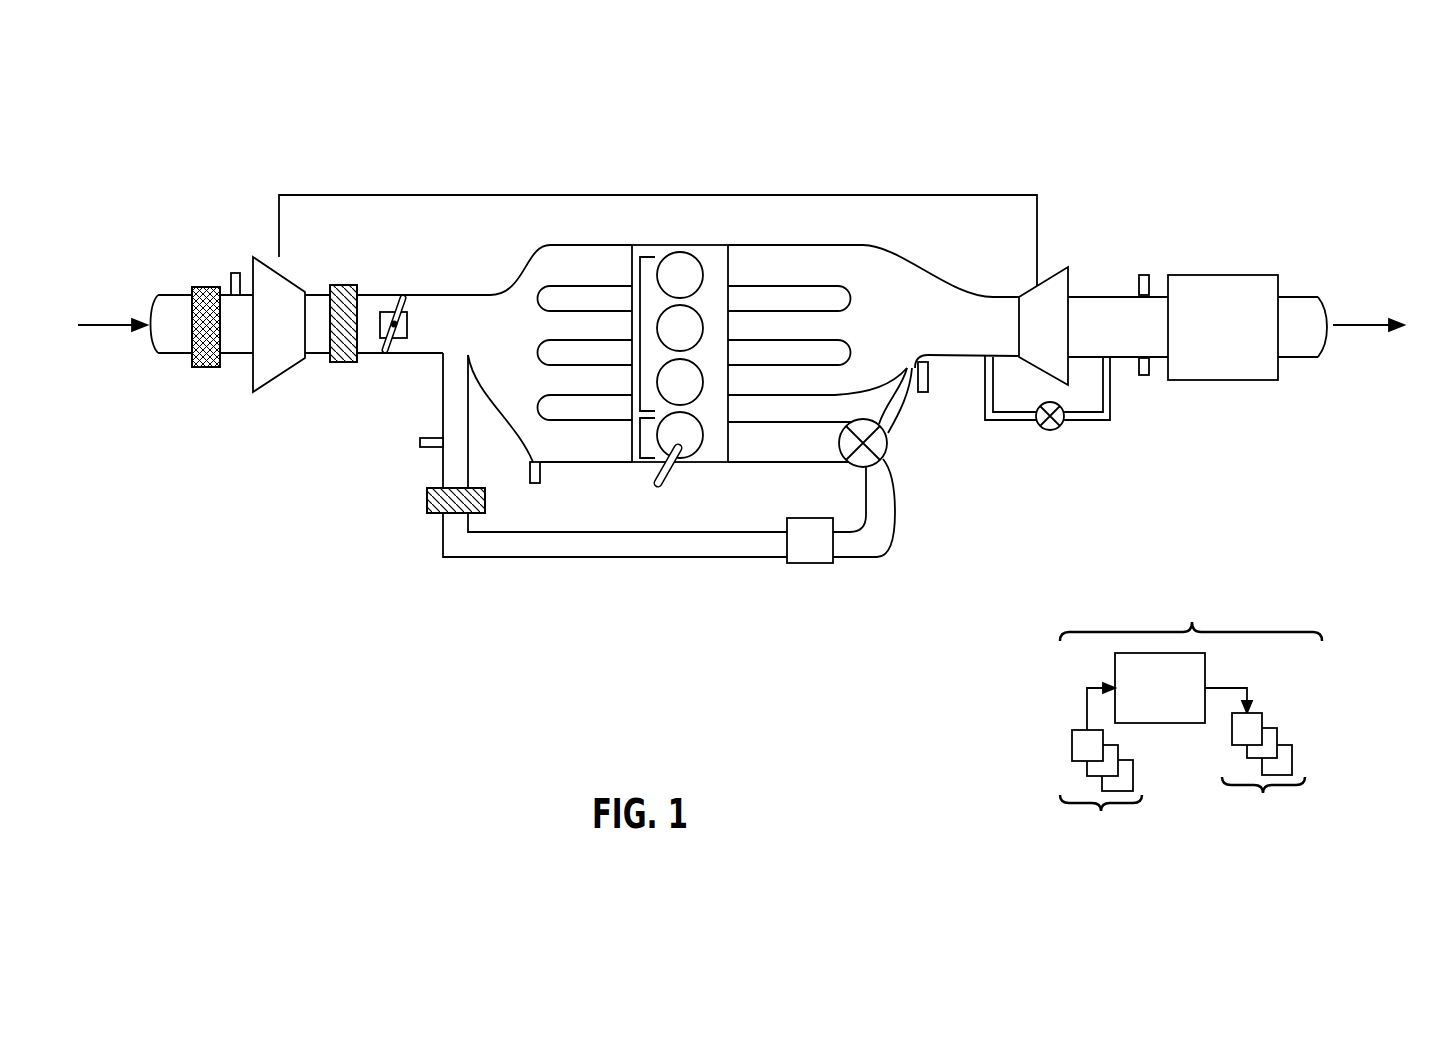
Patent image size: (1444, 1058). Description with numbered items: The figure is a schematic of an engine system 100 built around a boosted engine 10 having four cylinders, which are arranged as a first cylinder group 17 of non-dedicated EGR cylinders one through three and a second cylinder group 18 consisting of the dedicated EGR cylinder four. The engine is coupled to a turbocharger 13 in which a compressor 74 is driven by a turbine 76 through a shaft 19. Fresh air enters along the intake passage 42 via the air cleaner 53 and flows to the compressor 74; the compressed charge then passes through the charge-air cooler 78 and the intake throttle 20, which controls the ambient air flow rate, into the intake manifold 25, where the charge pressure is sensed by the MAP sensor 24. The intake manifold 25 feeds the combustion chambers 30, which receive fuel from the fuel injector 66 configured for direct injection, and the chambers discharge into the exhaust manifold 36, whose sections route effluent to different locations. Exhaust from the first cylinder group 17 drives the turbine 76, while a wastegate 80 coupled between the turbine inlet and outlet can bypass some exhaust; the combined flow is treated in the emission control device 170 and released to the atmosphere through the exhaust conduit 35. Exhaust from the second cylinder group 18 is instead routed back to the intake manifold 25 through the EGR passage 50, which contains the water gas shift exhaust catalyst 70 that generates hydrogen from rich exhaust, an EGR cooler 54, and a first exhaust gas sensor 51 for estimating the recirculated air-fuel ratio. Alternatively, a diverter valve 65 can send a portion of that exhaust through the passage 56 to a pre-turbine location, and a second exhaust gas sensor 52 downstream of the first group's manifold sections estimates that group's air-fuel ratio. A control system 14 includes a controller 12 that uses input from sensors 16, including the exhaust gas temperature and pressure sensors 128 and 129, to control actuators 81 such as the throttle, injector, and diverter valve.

The engine system 100 is at (1290, 124).
The engine 10 is at (710, 245).
The controller 12 is at (1169, 691).
The turbocharger 13 is at (284, 400).
The control system 14 is at (1191, 608).
The sensors 16 is at (1101, 792).
The first cylinder group 17 is at (650, 257).
The second cylinder group 18 is at (640, 450).
The shaft 19 is at (613, 195).
The intake throttle 20 is at (412, 331).
The manifold air pressure sensor 24 is at (530, 480).
The intake manifold 25 is at (550, 353).
The combustion chambers 30 is at (698, 267).
The exhaust conduit 35 is at (1293, 296).
The exhaust manifold 36 is at (873, 353).
The intake passage 42 is at (177, 355).
The EGR passage 50 is at (700, 557).
The first exhaust gas sensor 51 is at (435, 448).
The second exhaust gas sensor 52 is at (928, 393).
The air cleaner 53 is at (207, 287).
The EGR cooler 54 is at (437, 517).
The passage 56 is at (907, 420).
The diverter valve 65 is at (888, 450).
The fuel injector 66 is at (676, 470).
The exhaust catalyst 70 is at (810, 540).
The compressor 74 is at (279, 324).
The turbine 76 is at (1043, 326).
The charge-air cooler 78 is at (350, 285).
The wastegate 80 is at (1055, 430).
The actuators 81 is at (1263, 774).
The exhaust gas temperature and pressure sensor 128 is at (1144, 378).
The exhaust gas temperature and pressure sensor 129 is at (1147, 275).
The emission control device 170 is at (1210, 275).